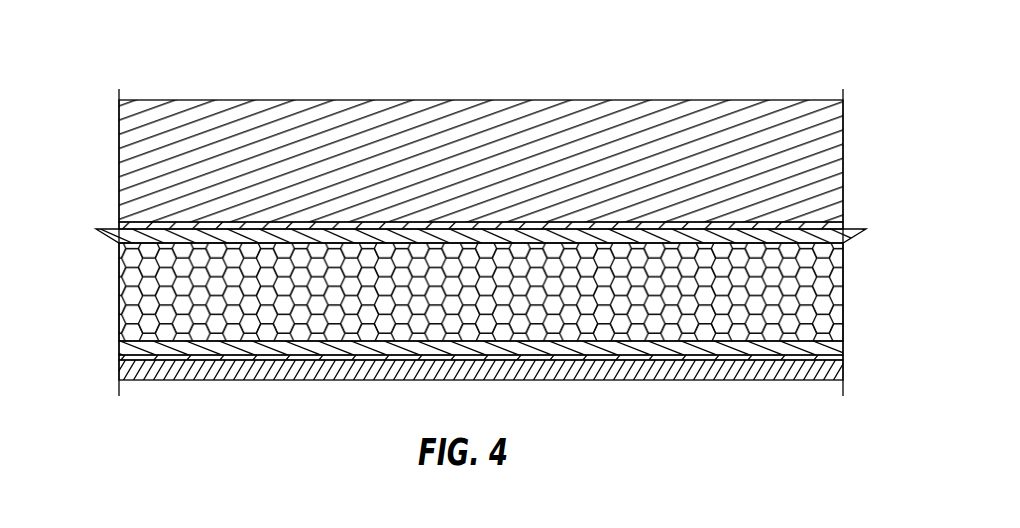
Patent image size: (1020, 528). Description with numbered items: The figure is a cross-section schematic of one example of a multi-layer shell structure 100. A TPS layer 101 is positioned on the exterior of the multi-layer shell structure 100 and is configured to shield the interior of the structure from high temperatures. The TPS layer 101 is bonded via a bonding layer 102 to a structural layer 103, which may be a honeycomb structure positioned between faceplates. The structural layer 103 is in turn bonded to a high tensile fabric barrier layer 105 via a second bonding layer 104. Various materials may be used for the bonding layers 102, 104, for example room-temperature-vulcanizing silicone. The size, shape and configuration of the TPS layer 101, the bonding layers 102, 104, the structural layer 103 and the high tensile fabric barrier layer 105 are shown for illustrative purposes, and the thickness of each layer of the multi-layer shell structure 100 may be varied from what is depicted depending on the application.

The multi-layer shell structure 100 is at (134, 48).
The TPS layer 101 is at (502, 174).
The bonding layer 102 is at (119, 227).
The structural layer 103 is at (840, 237).
The bonding layer 104 is at (119, 358).
The high tensile fabric barrier layer 105 is at (843, 368).